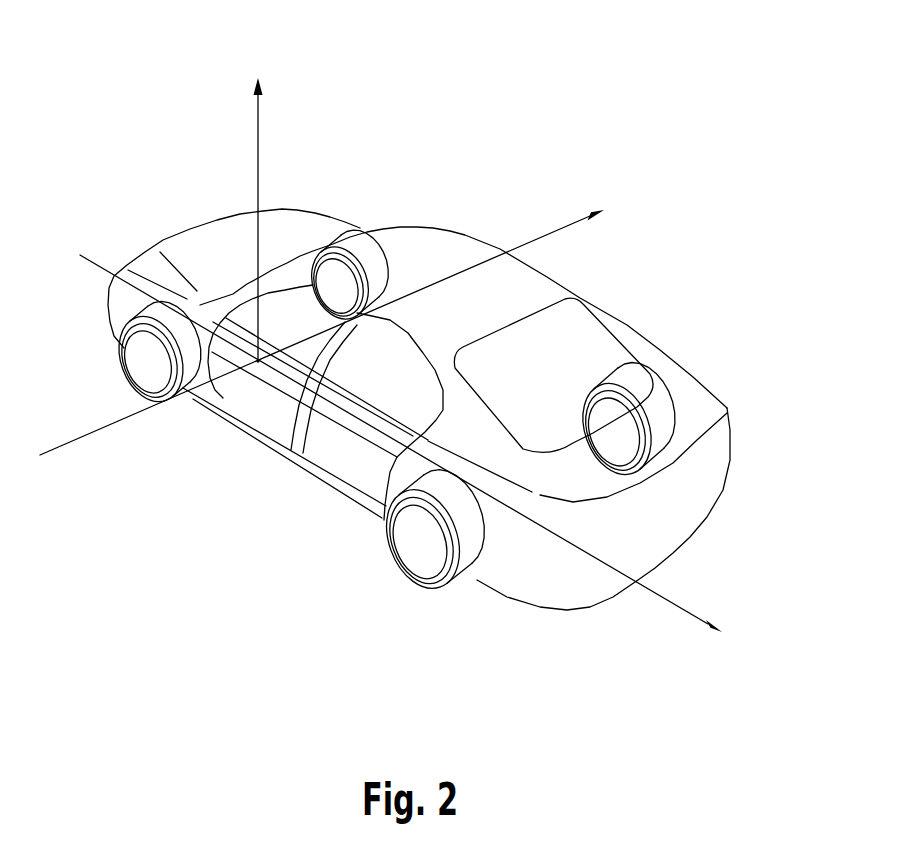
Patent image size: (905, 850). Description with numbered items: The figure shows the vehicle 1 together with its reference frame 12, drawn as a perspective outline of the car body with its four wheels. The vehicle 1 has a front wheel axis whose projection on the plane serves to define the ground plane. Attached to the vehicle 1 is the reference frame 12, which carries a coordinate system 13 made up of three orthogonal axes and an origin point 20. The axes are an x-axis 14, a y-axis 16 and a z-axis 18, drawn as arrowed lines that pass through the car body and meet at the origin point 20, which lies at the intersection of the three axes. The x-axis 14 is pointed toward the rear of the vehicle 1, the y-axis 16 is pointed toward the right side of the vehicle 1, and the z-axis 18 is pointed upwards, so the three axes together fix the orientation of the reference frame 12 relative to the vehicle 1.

The vehicle 1 is at (438, 305).
The reference frame 12 is at (398, 70).
The coordinate system 13 is at (391, 350).
The x-axis 14 is at (667, 601).
The y-axis 16 is at (548, 233).
The z-axis 18 is at (260, 133).
The origin point 20 is at (257, 362).